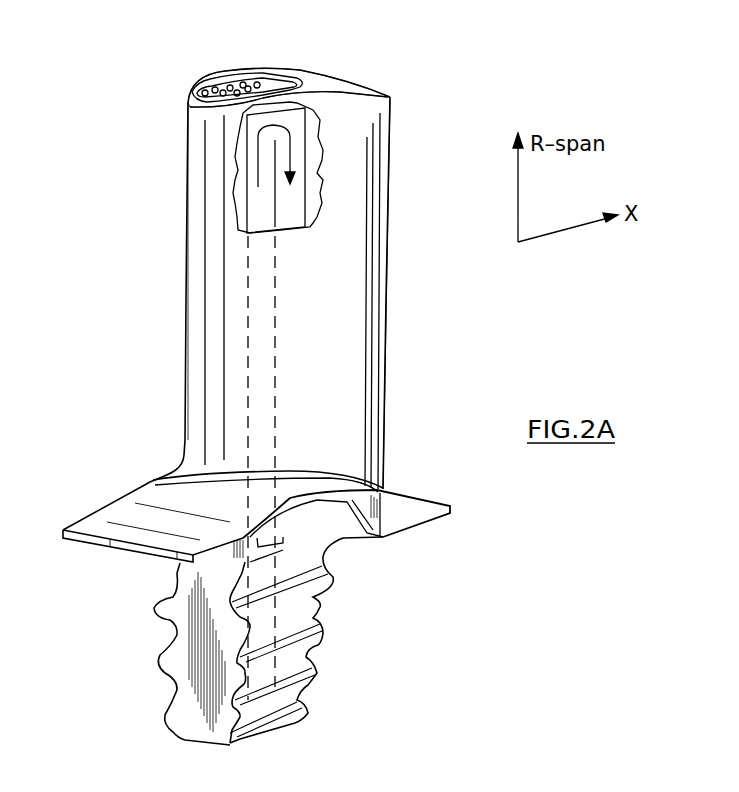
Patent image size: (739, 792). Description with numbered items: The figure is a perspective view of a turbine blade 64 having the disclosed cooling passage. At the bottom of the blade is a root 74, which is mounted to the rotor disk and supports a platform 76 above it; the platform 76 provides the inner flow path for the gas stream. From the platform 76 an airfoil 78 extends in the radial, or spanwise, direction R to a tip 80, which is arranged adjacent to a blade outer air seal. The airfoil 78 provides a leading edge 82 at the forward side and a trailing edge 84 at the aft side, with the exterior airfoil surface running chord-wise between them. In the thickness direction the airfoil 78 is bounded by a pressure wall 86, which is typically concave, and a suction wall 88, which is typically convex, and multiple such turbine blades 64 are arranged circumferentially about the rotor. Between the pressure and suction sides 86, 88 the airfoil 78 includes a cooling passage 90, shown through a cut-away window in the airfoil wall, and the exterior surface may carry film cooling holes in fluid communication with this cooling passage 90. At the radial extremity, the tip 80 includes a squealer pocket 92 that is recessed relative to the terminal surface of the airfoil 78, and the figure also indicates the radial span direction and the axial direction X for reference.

The turbine blade 64 is at (157, 251).
The root 74 is at (193, 653).
The platform 76 is at (292, 485).
The airfoil 78 is at (330, 377).
The tip 80 is at (201, 83).
The leading edge 82 is at (187, 247).
The trailing edge 84 is at (387, 237).
The pressure wall 86 is at (312, 294).
The suction wall 88 is at (320, 78).
The cooling passage 90 is at (312, 182).
The squealer pocket 92 is at (270, 84).